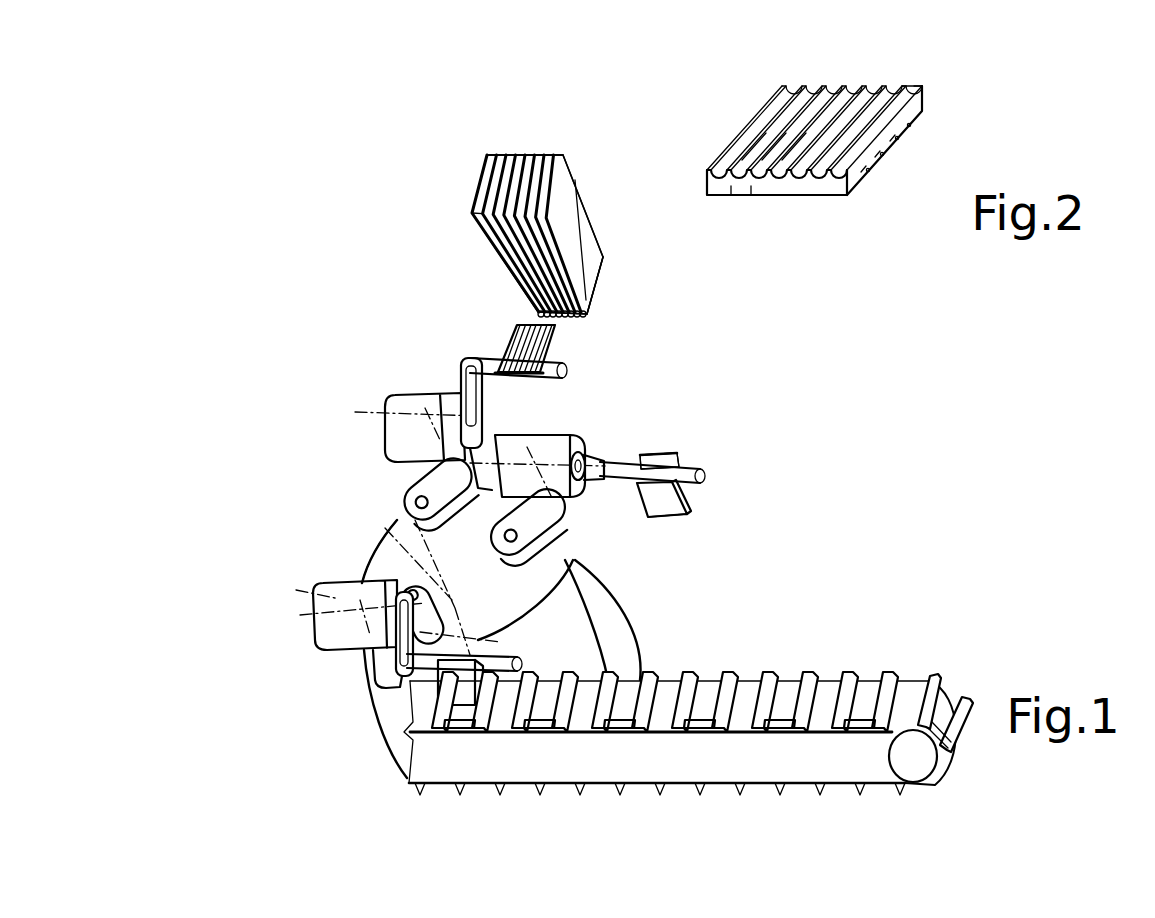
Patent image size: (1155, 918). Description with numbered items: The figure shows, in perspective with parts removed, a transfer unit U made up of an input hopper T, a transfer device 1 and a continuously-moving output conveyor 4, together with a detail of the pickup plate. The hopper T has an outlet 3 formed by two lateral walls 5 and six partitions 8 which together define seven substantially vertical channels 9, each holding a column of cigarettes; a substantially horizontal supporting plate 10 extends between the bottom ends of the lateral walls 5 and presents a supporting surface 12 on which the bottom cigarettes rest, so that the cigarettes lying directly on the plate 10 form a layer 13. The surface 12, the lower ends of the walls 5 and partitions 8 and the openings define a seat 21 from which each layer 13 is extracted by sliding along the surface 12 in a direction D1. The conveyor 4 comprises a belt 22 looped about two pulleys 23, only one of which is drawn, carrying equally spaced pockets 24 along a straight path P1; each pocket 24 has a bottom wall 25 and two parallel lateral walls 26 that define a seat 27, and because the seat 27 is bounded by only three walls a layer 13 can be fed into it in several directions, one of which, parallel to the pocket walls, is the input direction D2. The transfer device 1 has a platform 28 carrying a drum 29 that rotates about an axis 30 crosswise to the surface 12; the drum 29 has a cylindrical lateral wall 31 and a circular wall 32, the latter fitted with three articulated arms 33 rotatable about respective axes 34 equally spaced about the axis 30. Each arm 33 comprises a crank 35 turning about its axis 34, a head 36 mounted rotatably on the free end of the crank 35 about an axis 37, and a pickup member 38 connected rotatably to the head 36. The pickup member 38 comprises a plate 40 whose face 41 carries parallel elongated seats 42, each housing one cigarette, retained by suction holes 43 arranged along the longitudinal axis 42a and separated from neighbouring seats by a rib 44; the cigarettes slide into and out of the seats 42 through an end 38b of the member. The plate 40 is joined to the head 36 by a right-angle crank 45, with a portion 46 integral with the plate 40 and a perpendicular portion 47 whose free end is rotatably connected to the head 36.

In FIG. 1, the transfer device 1 is at (262, 507).
In FIG. 1, the outlet 3 is at (502, 208).
In FIG. 1, the output conveyor 4 is at (570, 737).
In FIG. 1, the lateral walls 5 is at (485, 175).
In FIG. 1, the partitions 8 is at (525, 157).
In FIG. 1, the channels 9 is at (497, 218).
In FIG. 1, the supporting plate 10 is at (604, 290).
In FIG. 1, the supporting surface 12 is at (597, 262).
In FIG. 1, the layer of cigarettes 13 is at (590, 317).
In FIG. 1, the seat 21 is at (523, 305).
In FIG. 1, the belt 22 is at (872, 784).
In FIG. 1, the pulley 23 is at (918, 774).
In FIG. 1, the pocket 24 is at (880, 668).
In FIG. 1, the bottom wall 25 is at (862, 690).
In FIG. 1, the lateral walls 26 is at (832, 672).
In FIG. 1, the seat 27 is at (665, 666).
In FIG. 1, the platform 28 is at (499, 628).
In FIG. 1, the drum 29 is at (383, 525).
In FIG. 1, the axis 30 is at (383, 548).
In FIG. 1, the cylindrical lateral wall 31 is at (572, 615).
In FIG. 1, the circular wall 32 is at (372, 570).
In FIG. 1, the articulated arm 33 is at (518, 516).
In FIG. 1, the axis 34 is at (398, 487).
In FIG. 1, the crank 35 is at (597, 548).
In FIG. 1, the head 36 is at (432, 398).
In FIG. 1, the axis 37 is at (439, 512).
In FIG. 2, the pickup member 38 is at (945, 136).
In FIG. 1, the pickup member 38 is at (560, 343).
In FIG. 2, the end of pickup member 38b is at (923, 85).
In FIG. 1, the end of pickup member 38b is at (685, 523).
In FIG. 2, the plate 40 is at (852, 186).
In FIG. 1, the plate 40 is at (512, 352).
In FIG. 2, the face 41 is at (846, 86).
In FIG. 2, the elongated seats 42 is at (797, 130).
In FIG. 2, the longitudinal axis 42a is at (908, 82).
In FIG. 2, the suction holes 43 is at (860, 152).
In FIG. 2, the rib 44 is at (765, 178).
In FIG. 1, the right-angle crank 45 is at (455, 385).
In FIG. 1, the portion 46 is at (566, 372).
In FIG. 1, the portion 47 is at (333, 678).
In FIG. 1, the input hopper T is at (453, 153).
In FIG. 1, the transfer unit U is at (257, 772).
In FIG. 1, the direction D1 is at (607, 312).
In FIG. 1, the input direction D2 is at (668, 665).
In FIG. 1, the path P1 is at (722, 656).